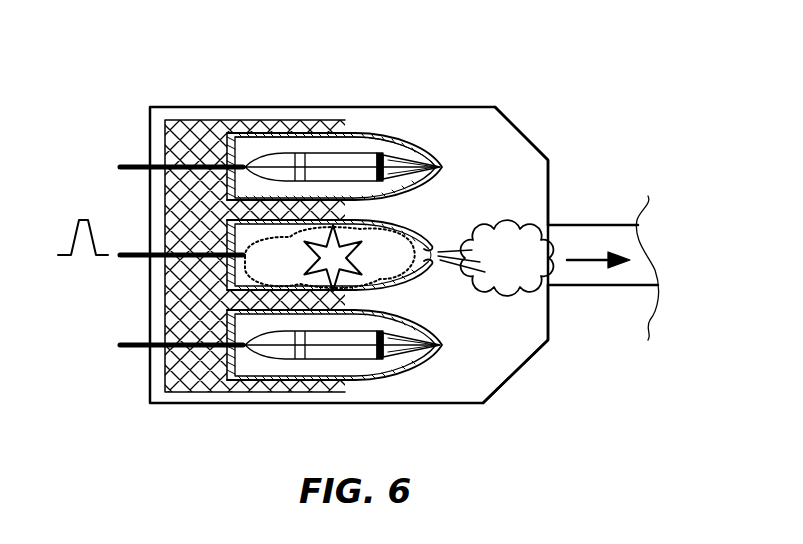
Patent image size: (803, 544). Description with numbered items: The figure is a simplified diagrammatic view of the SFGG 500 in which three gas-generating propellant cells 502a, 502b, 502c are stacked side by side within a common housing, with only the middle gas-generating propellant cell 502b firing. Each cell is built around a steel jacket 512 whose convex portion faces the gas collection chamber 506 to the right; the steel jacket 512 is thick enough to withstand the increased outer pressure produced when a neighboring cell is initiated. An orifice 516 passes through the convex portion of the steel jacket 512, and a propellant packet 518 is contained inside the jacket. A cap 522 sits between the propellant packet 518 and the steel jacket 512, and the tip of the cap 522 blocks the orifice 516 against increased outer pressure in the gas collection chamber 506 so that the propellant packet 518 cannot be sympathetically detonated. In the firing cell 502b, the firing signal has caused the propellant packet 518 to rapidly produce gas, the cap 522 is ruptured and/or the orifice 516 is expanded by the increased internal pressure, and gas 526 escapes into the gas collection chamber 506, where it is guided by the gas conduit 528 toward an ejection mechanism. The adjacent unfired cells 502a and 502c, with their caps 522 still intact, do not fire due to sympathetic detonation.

The SFGG 500 is at (482, 107).
The gas-generating propellant cell 502a is at (390, 138).
The gas-generating propellant cell 502b is at (430, 229).
The gas-generating propellant cell 502c is at (385, 380).
The gas collection chamber 506 is at (510, 119).
The steel jacket 512 is at (362, 131).
The orifice 516 is at (440, 249).
The propellant packet 518 is at (283, 160).
The cap 522 is at (440, 160).
The gas 526 is at (520, 265).
The gas conduit 528 is at (610, 287).